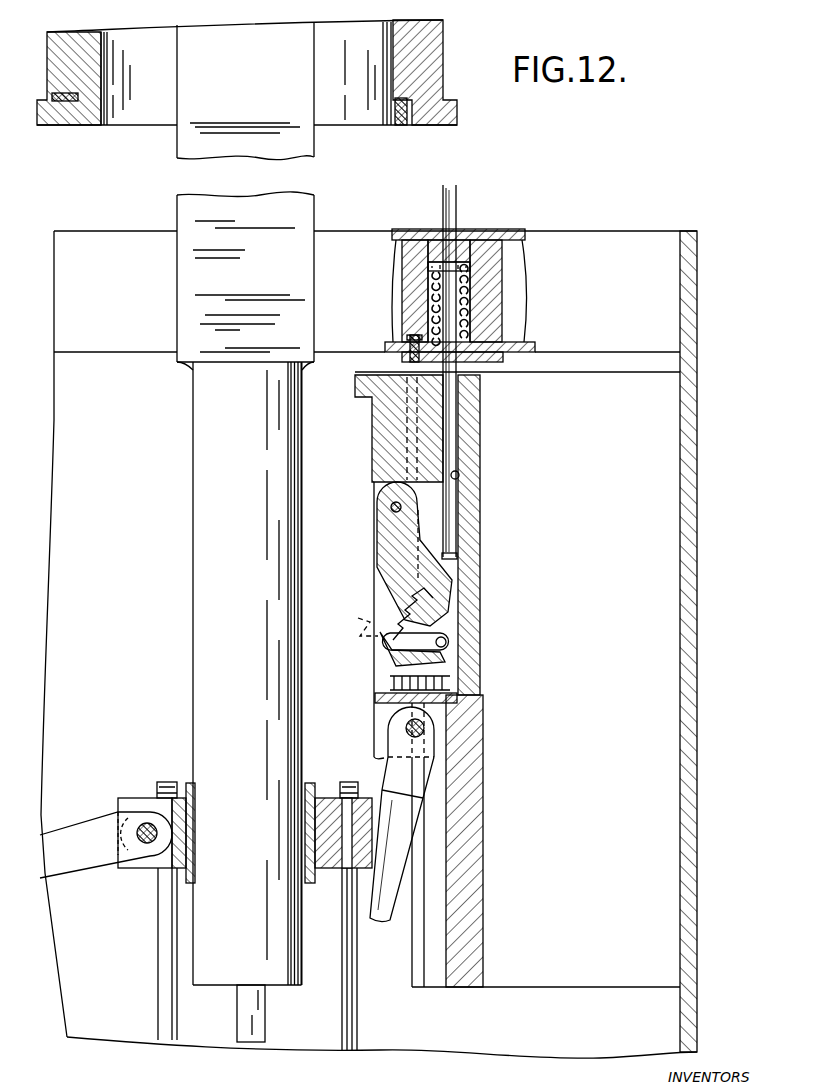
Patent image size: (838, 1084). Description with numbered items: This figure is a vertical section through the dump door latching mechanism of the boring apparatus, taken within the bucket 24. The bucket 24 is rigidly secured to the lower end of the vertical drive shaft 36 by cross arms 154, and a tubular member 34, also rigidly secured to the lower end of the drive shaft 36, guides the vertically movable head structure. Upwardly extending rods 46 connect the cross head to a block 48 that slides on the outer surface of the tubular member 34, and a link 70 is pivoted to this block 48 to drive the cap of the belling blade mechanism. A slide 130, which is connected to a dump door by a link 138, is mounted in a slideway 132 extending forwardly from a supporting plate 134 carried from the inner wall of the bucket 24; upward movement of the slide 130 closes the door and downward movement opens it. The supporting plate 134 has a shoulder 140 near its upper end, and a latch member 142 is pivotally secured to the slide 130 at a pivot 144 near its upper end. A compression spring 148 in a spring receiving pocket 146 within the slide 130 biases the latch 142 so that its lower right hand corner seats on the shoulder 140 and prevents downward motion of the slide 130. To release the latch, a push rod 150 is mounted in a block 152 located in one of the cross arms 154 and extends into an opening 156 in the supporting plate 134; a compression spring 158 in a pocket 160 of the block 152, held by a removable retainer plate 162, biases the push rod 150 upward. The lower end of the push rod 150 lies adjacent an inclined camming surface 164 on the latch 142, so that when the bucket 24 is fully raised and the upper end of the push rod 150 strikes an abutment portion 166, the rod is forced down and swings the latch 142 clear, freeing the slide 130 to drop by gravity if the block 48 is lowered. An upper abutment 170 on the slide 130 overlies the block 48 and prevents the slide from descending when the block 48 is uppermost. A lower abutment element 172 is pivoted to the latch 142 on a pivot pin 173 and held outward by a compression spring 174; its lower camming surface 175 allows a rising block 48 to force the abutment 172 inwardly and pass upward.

The bucket 24 is at (697, 712).
The tubular member 34 is at (193, 585).
The drive shaft 36 is at (316, 205).
The upwardly extending rods 46 is at (165, 972).
The block 48 is at (146, 795).
The link 70 is at (85, 868).
The slide 130 is at (374, 437).
The slideway 132 is at (420, 970).
The supporting plate 134 is at (485, 810).
The link 138 is at (395, 872).
The shoulder 140 is at (452, 690).
The latch member 142 is at (377, 556).
The pivot 144 is at (391, 508).
The spring receiving pocket 146 is at (375, 700).
The compression spring 148 is at (380, 718).
The push rod 150 is at (450, 228).
The block 152 is at (487, 262).
The cross arms 154 is at (583, 230).
The opening 156 is at (458, 477).
The compression spring 158 is at (462, 305).
The pocket 160 is at (466, 330).
The retainer plate 162 is at (505, 358).
The inclined camming surface 164 is at (430, 568).
The abutment portion 166 is at (435, 122).
The upper abutment 170 is at (362, 381).
The lower abutment element 172 is at (385, 655).
The pivot pin 173 is at (455, 648).
The compression spring 174 is at (395, 622).
The lower camming surface 175 is at (384, 637).